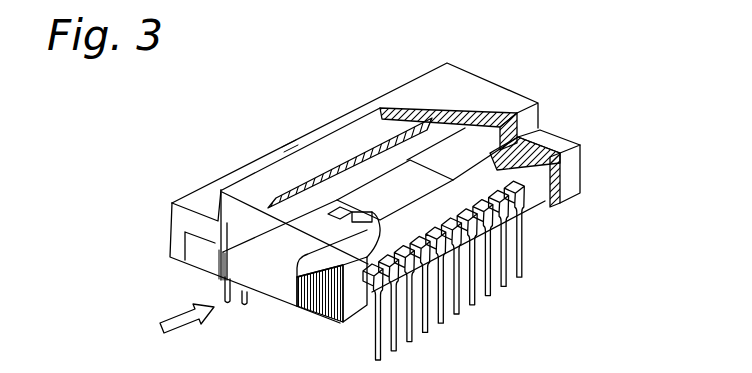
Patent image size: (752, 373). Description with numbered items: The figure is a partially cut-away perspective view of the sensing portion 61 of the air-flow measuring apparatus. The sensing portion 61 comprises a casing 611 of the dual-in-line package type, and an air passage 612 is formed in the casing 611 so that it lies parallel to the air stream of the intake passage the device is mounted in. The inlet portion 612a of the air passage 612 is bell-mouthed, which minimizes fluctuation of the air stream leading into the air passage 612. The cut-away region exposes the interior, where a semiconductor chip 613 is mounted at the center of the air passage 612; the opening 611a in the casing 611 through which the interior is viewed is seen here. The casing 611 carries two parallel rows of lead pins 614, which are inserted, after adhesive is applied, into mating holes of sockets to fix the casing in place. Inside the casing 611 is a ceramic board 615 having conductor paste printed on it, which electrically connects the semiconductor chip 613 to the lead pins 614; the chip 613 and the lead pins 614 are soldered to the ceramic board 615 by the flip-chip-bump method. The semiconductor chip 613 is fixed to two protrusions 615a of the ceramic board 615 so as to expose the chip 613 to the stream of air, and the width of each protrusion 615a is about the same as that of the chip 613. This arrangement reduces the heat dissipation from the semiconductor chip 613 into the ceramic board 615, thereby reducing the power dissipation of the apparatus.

The sensing portion 61 is at (518, 62).
The casing 611 is at (528, 94).
The opening of cover 611a is at (330, 178).
The air passage 612 is at (270, 290).
The inlet portion 612a is at (236, 263).
The semiconductor chip 613 is at (352, 213).
The lead pins 614 is at (523, 237).
The ceramic board 615 is at (567, 142).
The protrusions 615a is at (317, 217).